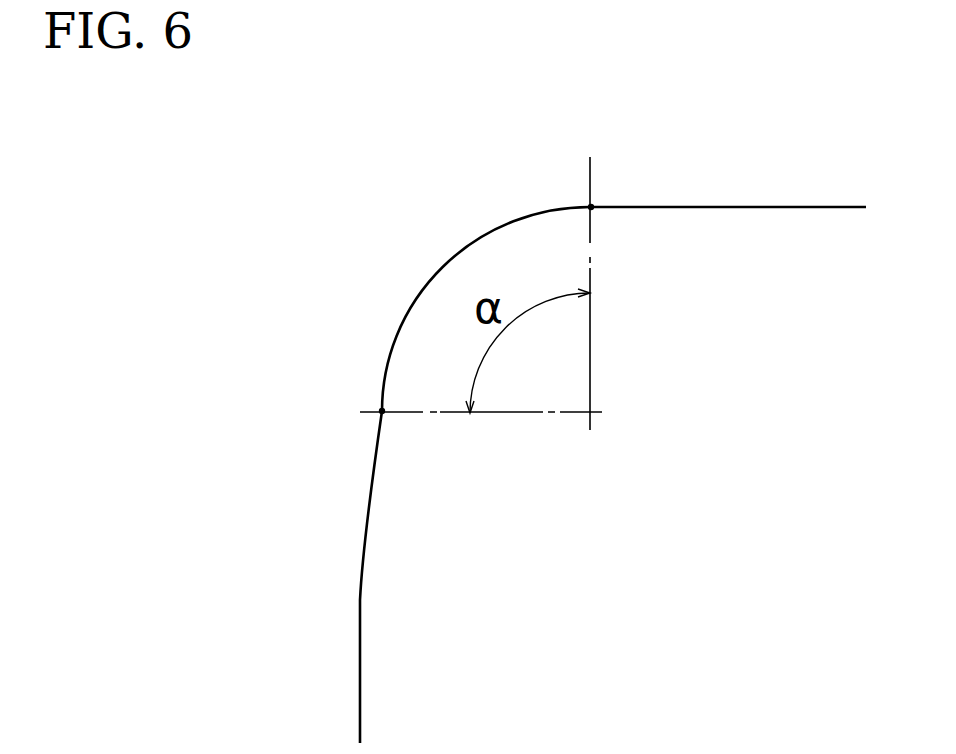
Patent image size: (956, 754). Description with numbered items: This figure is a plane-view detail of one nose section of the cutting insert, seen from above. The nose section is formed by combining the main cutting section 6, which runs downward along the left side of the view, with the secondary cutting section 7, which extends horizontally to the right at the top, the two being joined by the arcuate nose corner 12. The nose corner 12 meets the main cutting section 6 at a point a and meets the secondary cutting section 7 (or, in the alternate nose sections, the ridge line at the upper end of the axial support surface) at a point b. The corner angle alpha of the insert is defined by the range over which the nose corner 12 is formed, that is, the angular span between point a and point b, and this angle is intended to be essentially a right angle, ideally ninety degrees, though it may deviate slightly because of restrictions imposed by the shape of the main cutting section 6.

The main cutting section 6 is at (360, 600).
The secondary cutting section 7 is at (732, 154).
The arcuate nose corner 12 is at (425, 283).
The point a is at (382, 411).
The point b is at (591, 207).